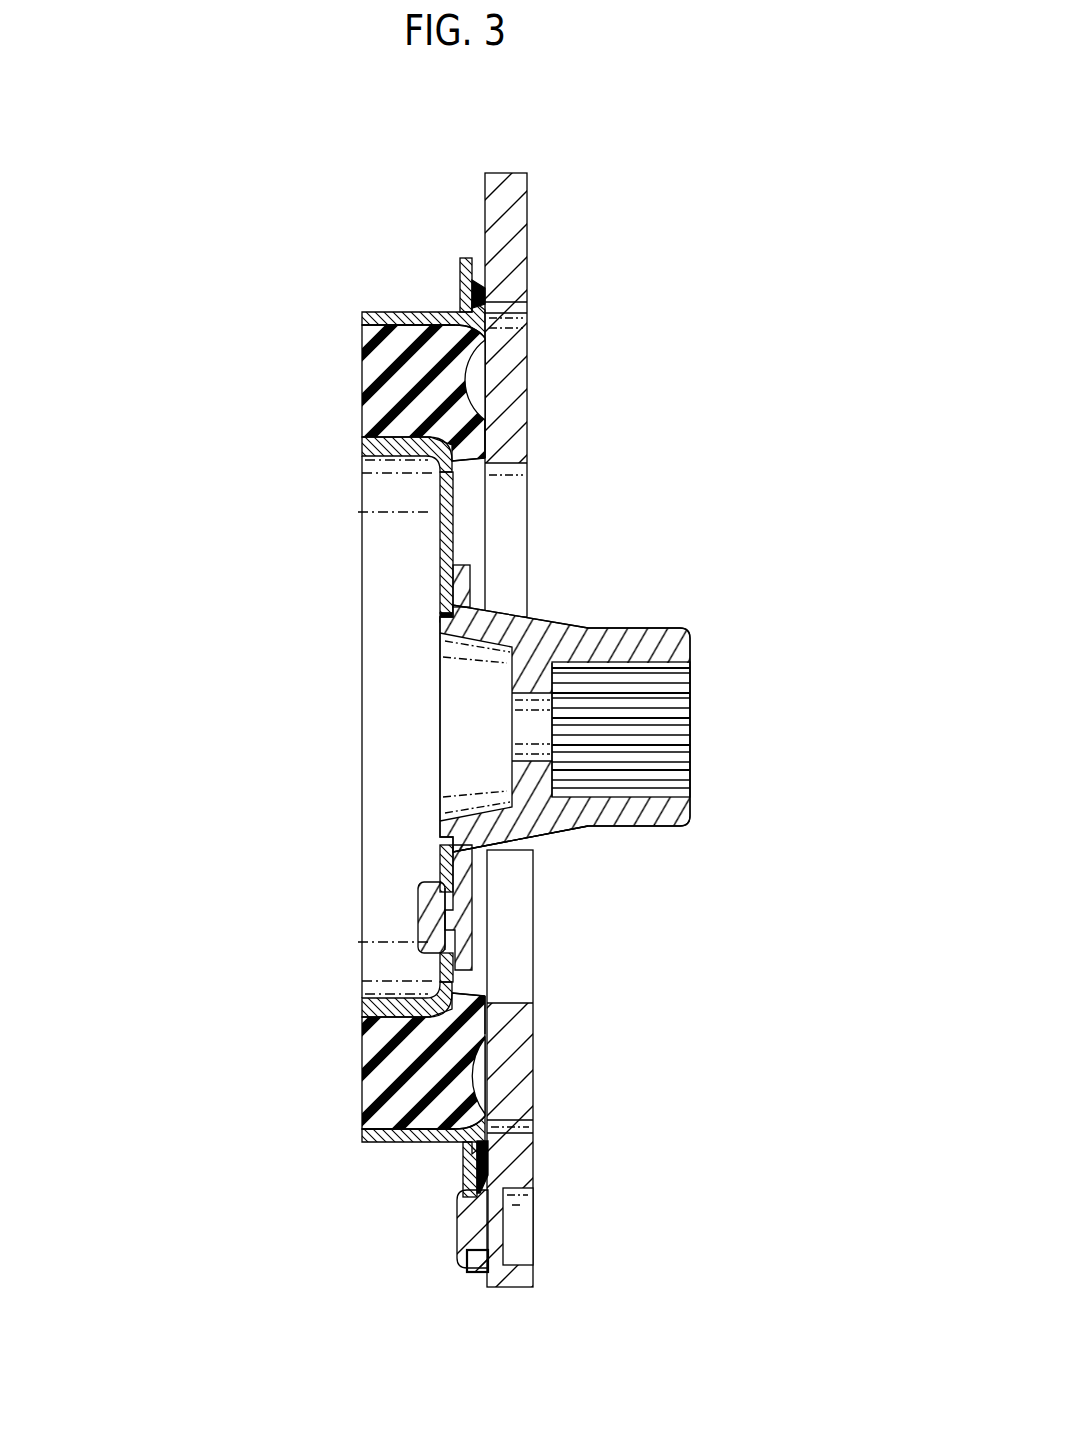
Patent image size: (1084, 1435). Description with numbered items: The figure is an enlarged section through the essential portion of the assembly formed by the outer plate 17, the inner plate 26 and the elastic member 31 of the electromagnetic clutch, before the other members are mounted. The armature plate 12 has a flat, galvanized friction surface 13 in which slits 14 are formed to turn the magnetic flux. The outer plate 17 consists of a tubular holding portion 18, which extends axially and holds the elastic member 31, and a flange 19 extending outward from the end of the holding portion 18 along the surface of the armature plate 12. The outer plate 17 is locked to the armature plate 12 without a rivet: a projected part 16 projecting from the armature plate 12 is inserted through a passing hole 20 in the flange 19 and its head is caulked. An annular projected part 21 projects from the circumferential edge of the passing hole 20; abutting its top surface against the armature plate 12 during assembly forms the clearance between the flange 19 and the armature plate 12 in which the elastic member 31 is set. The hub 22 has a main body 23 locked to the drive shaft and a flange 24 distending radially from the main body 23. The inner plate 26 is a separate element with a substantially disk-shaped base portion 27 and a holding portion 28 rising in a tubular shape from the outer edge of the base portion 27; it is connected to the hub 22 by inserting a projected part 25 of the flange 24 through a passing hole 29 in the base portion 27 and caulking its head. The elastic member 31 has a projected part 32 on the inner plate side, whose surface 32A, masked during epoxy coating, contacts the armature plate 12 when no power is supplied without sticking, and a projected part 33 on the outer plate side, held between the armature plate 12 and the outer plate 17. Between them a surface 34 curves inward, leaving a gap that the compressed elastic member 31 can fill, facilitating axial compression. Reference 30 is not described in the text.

The armature plate 12 is at (507, 183).
The friction surface 13 is at (533, 1285).
The slits 14 is at (518, 320).
The projected part 16 is at (458, 1236).
The outer plate 17 is at (464, 250).
The holding portion 18 is at (372, 310).
The flange 19 is at (458, 280).
The passing hole 20 is at (457, 1224).
The annular projected part 21 is at (482, 1262).
The hub 22 is at (662, 619).
The main body 23 is at (610, 830).
The flange 24 is at (473, 587).
The projected part 25 is at (418, 918).
The inner plate 26 is at (372, 466).
The base portion 27 is at (435, 527).
The holding portion 28 is at (398, 470).
The passing hole 29 is at (418, 890).
The outer elastic layer 30 is at (368, 335).
The elastic member 31 is at (375, 382).
The projected part 32 is at (475, 446).
The surface 32A is at (487, 424).
The projected part 33 is at (522, 302).
The surface 34 is at (494, 380).